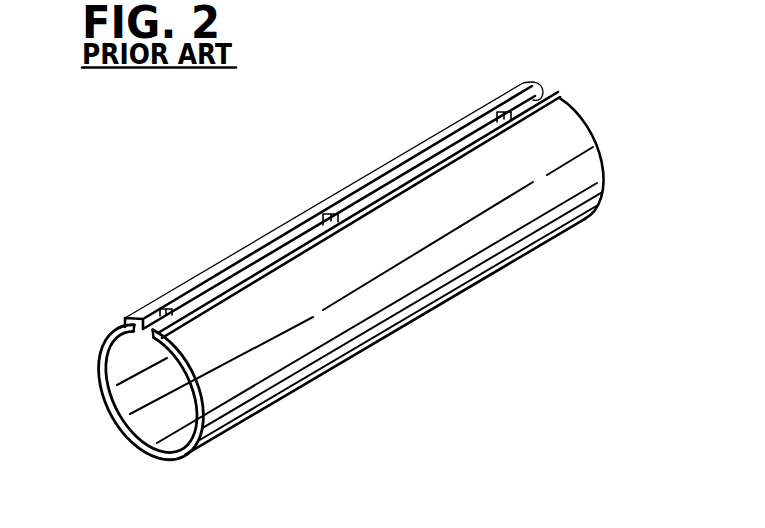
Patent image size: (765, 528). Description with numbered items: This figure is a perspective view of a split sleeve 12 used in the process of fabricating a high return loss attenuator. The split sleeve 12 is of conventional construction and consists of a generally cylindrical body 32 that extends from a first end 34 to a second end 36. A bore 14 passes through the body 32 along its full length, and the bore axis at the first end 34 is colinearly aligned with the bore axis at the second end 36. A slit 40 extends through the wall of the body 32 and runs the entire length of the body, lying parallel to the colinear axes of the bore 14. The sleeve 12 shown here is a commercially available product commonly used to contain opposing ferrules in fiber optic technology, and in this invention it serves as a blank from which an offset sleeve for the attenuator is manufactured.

The split sleeve 12 is at (150, 284).
The bore 14 is at (150, 420).
The cylindrical body 32 is at (232, 452).
The first end 34 is at (102, 381).
The second end 36 is at (608, 163).
The slit 40 is at (385, 180).